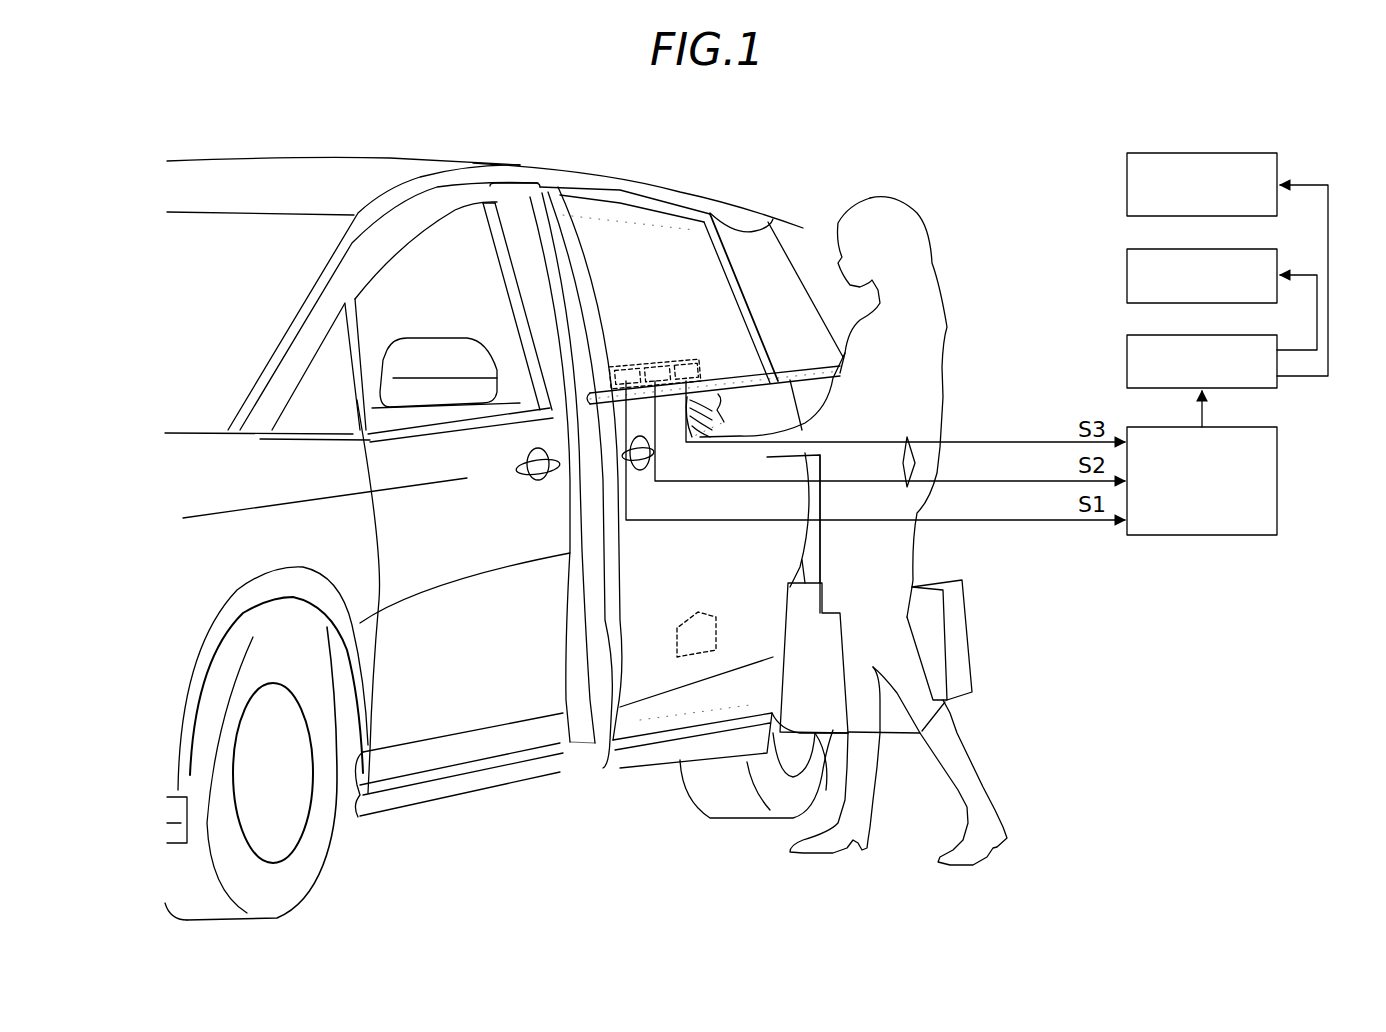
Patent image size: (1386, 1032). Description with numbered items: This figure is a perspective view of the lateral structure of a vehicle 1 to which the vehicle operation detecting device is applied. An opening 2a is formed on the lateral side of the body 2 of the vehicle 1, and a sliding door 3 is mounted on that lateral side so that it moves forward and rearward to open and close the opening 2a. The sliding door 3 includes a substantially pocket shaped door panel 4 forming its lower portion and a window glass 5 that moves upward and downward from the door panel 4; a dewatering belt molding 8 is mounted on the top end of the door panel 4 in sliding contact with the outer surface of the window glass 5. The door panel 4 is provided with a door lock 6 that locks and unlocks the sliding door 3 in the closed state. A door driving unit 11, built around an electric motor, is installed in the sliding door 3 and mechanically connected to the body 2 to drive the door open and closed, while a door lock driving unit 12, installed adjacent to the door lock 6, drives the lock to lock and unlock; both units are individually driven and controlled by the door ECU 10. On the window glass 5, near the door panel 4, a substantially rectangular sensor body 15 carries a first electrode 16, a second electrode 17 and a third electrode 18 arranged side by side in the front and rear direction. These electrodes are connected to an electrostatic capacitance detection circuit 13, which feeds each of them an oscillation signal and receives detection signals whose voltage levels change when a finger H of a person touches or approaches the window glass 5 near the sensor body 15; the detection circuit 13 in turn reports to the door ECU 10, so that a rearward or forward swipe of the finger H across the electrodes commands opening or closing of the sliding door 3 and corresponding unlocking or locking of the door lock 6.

The vehicle 1 is at (213, 150).
The body 2 is at (743, 204).
The opening 2a is at (578, 738).
The sliding door 3 is at (624, 192).
The door panel 4 is at (633, 728).
The window glass 5 is at (685, 235).
The door lock 6 is at (698, 614).
The dewatering belt molding 8 is at (717, 378).
The door ECU 10 is at (1195, 333).
The door driving unit 11 is at (1195, 247).
The door lock driving unit 12 is at (1195, 151).
The electrostatic capacitance detection circuit 13 is at (1278, 474).
The sensor body 15 is at (698, 364).
The first electrode 16 is at (625, 366).
The second electrode 17 is at (653, 366).
The third electrode 18 is at (683, 366).
The finger H is at (707, 443).